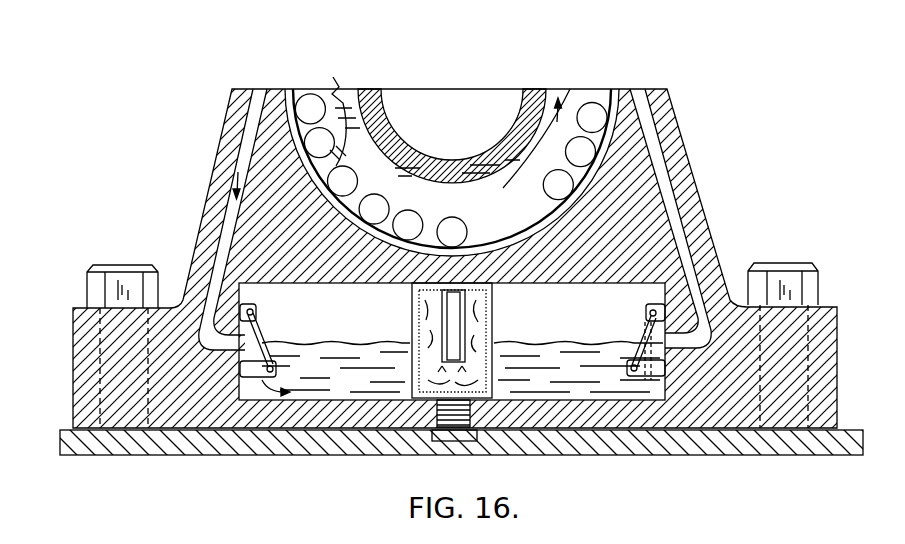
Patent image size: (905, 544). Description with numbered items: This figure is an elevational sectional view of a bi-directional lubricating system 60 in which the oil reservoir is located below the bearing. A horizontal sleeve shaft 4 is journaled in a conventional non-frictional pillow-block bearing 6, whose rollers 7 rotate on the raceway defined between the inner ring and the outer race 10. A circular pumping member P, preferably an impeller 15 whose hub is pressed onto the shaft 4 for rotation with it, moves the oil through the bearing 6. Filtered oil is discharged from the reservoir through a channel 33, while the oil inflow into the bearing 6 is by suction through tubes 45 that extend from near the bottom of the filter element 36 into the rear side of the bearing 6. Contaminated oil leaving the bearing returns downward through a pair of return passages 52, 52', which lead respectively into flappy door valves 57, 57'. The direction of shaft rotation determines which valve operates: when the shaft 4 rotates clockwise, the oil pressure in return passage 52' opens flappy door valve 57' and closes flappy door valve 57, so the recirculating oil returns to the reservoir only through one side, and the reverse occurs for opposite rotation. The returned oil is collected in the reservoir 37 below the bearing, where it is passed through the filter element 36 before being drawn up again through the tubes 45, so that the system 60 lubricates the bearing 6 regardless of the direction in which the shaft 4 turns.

The bi-directional system 60 is at (688, 124).
The return passage 52 is at (214, 219).
The return passage 52' is at (694, 218).
The sleeve shaft 4 is at (522, 123).
The channel 33 is at (466, 233).
The outer race 10 is at (609, 91).
The rollers 7 is at (556, 191).
The bearing 6 is at (373, 212).
The impeller 15 is at (343, 101).
The pumping member P is at (478, 185).
The remote reservoir 37 is at (376, 323).
The filter element 36 is at (478, 318).
The tubes 45 is at (462, 338).
The flappy door valve 57 is at (270, 350).
The flappy door valve 57' is at (631, 341).